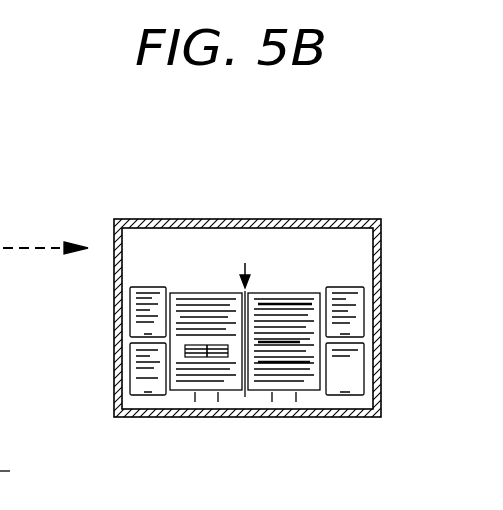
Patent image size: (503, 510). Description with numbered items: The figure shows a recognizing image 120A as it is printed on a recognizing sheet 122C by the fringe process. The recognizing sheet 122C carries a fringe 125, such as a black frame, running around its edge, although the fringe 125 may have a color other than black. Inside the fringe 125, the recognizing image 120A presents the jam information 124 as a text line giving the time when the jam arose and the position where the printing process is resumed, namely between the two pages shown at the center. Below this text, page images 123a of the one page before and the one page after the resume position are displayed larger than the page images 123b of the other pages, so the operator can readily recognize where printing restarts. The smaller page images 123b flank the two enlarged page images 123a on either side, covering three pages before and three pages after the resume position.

The recognizing image 120A is at (276, 226).
The jam information 124 is at (385, 277).
The recognizing sheet 122C is at (364, 298).
The page images 123b is at (130, 362).
The page images 123a is at (262, 383).
The fringe 125 is at (381, 397).